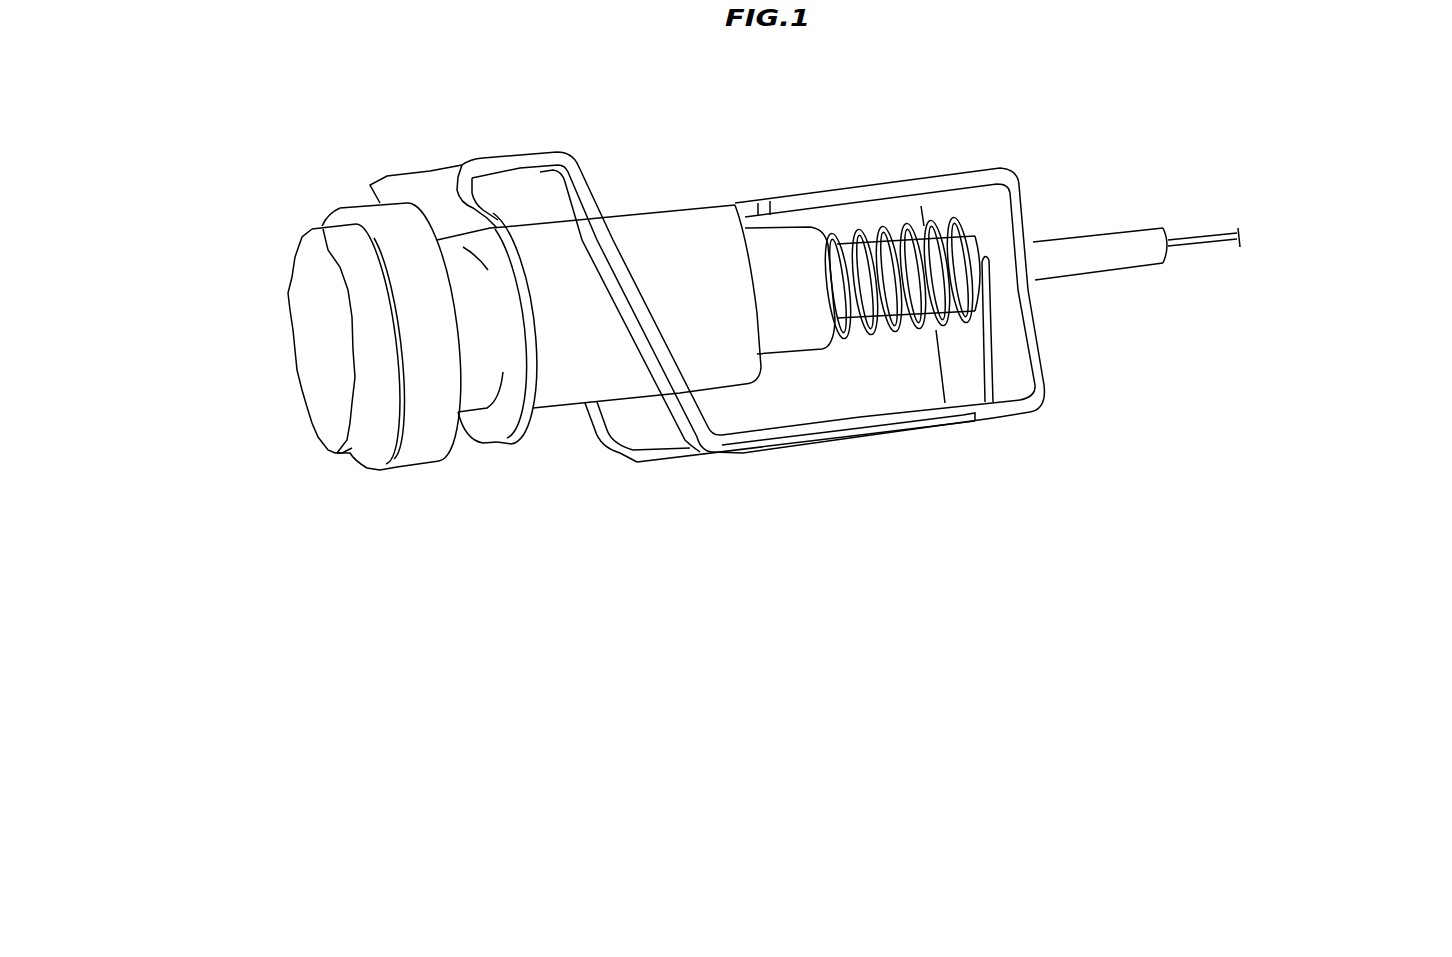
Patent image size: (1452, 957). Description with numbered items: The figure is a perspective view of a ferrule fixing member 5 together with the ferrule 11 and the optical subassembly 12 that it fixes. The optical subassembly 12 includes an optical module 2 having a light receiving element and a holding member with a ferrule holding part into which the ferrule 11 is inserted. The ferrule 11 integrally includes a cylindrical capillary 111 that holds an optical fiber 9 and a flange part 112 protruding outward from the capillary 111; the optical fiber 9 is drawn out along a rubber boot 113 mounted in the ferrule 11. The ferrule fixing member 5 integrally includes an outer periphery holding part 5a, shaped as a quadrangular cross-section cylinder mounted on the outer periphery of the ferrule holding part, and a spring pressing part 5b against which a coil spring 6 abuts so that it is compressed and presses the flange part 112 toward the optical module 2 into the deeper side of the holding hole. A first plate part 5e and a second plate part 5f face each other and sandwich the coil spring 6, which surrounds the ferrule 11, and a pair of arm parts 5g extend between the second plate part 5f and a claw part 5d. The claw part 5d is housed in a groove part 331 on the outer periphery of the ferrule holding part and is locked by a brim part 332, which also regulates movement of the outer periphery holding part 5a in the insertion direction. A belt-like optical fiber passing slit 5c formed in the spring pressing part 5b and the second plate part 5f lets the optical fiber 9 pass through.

The optical module 2 is at (288, 387).
The ferrule fixing member 5 is at (812, 299).
The outer periphery holding part 5a is at (632, 232).
The spring pressing part 5b is at (1159, 298).
The optical fiber passing slit 5c is at (985, 340).
The claw part 5d is at (452, 215).
The first plate part 5e is at (910, 188).
The second plate part 5f is at (980, 410).
The arm parts 5g is at (601, 333).
The coil spring 6 is at (940, 226).
The optical fiber 9 is at (1217, 233).
The ferrule 11 is at (880, 335).
The optical subassembly 12 is at (528, 395).
The capillary 111 is at (940, 268).
The flange part 112 is at (807, 327).
The rubber boot 113 is at (1130, 257).
The groove part 331 is at (474, 402).
The brim part 332 is at (517, 427).